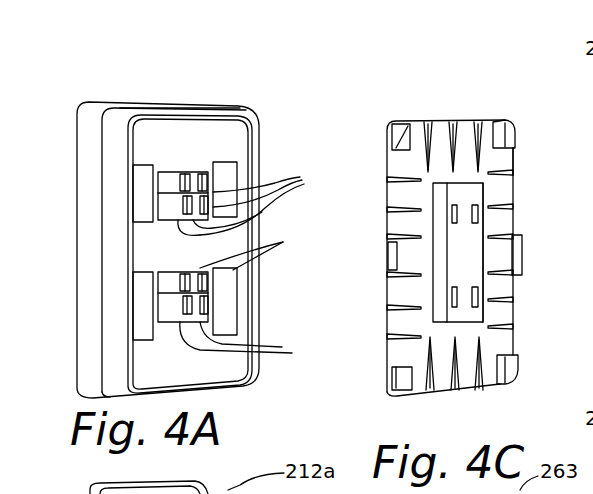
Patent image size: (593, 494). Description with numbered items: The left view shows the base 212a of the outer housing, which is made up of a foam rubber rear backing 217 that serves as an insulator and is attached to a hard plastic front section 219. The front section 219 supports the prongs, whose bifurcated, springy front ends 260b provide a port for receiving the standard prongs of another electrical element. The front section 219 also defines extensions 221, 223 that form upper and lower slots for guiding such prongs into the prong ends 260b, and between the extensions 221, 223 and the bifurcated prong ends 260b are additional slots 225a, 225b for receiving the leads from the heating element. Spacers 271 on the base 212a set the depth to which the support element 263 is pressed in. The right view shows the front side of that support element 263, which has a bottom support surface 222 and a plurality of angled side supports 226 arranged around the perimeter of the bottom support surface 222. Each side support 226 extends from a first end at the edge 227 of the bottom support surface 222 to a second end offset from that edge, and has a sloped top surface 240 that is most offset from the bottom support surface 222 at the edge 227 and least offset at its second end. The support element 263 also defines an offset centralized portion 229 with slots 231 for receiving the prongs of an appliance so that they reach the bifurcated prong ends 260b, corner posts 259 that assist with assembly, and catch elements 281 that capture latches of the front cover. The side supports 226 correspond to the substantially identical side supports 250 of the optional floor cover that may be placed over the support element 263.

In FIG. 4A, the rear backing 217 is at (90, 233).
In FIG. 4A, the front section 219 is at (226, 143).
In FIG. 4A, the base 212a is at (213, 113).
In FIG. 4A, the spacers 271 is at (143, 304).
In FIG. 4A, the extension 221 is at (202, 170).
In FIG. 4A, the slot 225a is at (233, 173).
In FIG. 4A, the slot 225b is at (133, 303).
In FIG. 4A, the front ends of the prongs 260b is at (269, 217).
In FIG. 4A, the extension 223 is at (255, 344).
In FIG. 4C, the bottom support surface 222 is at (485, 171).
In FIG. 4C, the edge 227 is at (387, 152).
In FIG. 4C, the corner posts 259 is at (395, 393).
In FIG. 4C, the support element 263 is at (422, 127).
In FIG. 4C, the side supports 226 is at (458, 122).
In FIG. 4C, the sloped top surfaces 240 is at (406, 178).
In FIG. 4C, the catch element 281 is at (390, 255).
In FIG. 4C, the slots 231 is at (513, 173).
In FIG. 4C, the centralized portion 229 is at (463, 257).
In FIG. 4C, the side supports 250 is at (592, 270).